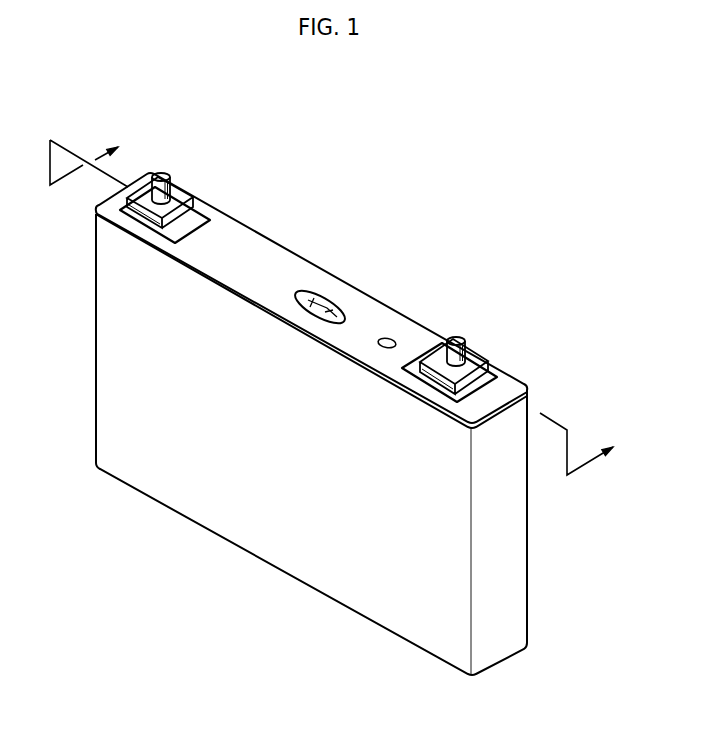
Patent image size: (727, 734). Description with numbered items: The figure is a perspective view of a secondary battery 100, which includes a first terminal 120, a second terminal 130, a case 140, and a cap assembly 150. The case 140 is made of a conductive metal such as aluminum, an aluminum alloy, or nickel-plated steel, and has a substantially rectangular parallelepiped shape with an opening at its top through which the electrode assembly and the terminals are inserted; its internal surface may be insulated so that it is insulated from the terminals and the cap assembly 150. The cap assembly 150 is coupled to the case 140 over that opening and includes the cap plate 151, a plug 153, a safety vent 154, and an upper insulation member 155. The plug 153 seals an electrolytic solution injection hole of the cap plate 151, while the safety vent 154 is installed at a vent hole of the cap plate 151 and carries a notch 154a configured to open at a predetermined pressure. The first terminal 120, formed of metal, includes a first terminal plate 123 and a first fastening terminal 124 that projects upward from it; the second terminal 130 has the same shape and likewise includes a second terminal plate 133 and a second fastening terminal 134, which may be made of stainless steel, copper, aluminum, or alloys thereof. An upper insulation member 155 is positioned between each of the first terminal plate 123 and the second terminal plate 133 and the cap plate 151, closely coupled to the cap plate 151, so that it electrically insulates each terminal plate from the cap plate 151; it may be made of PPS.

The secondary battery 100 is at (507, 152).
The first terminal 120 is at (157, 166).
The first terminal plate 123 is at (188, 206).
The first fastening terminal 124 is at (173, 173).
The second terminal 130 is at (461, 332).
The second terminal plate 133 is at (487, 370).
The second fastening terminal 134 is at (469, 338).
The case 140 is at (268, 548).
The cap assembly 150 is at (290, 265).
The cap plate 151 is at (248, 242).
The plug 153 is at (388, 339).
The safety vent 154 is at (322, 296).
The notch 154a is at (327, 306).
The upper insulation member 155 is at (200, 218).